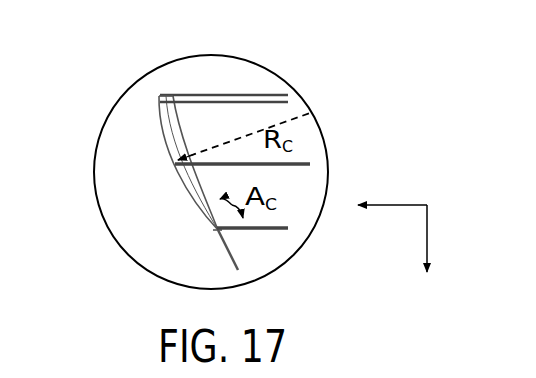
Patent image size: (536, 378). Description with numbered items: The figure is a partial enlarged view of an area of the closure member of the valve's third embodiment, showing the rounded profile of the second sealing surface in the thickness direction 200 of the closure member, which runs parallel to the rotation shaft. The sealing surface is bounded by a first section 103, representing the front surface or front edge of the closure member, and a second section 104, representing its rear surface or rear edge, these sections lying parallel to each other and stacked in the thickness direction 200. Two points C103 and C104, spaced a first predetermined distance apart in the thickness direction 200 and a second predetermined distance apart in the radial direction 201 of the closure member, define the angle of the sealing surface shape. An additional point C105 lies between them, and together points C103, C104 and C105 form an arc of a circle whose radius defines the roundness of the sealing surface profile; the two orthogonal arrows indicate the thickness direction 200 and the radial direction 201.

The second section 104 is at (276, 90).
The point C104 is at (152, 101).
The additional point C105 is at (164, 164).
The point C103 is at (213, 230).
The first section 103 is at (267, 233).
The radial direction 201 is at (392, 190).
The thickness direction 200 is at (452, 244).